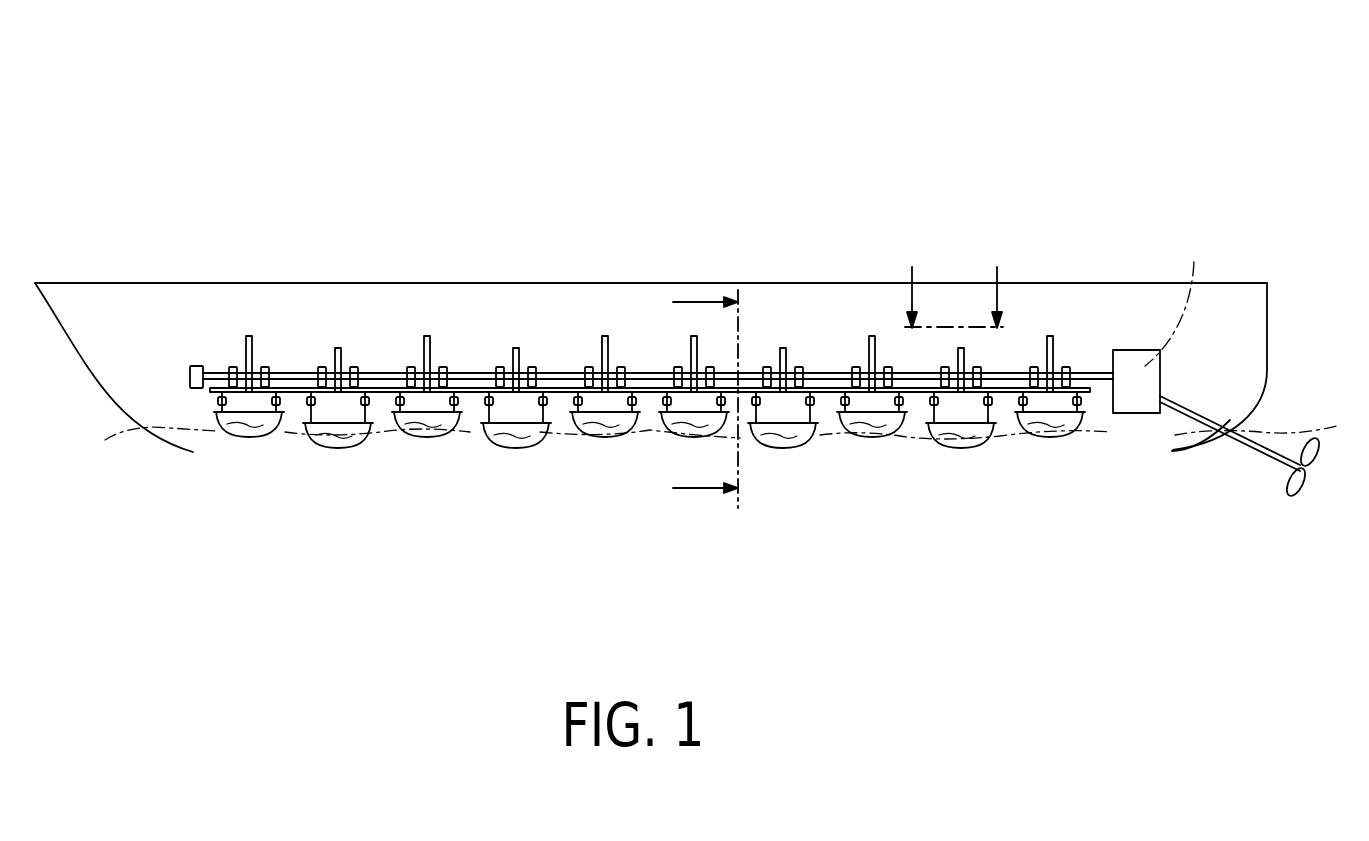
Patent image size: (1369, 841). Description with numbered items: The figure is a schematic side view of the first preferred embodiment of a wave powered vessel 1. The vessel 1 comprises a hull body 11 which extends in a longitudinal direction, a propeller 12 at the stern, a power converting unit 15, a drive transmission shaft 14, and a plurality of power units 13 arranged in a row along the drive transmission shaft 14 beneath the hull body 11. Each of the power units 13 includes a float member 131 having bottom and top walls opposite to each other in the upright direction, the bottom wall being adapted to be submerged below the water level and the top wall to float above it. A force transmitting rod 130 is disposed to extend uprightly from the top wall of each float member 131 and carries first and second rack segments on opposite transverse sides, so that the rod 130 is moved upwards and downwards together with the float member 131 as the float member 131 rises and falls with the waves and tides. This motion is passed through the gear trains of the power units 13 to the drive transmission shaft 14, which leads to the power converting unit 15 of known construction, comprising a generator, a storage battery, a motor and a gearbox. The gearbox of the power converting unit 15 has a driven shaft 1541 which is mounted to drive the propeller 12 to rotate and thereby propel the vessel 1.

The wave powered vessel 1 is at (683, 182).
The hull body 11 is at (940, 282).
The propeller 12 is at (1298, 492).
The power units 13 is at (230, 343).
The force transmitting rod 130 is at (254, 350).
The float member 131 is at (250, 440).
The drive transmission shaft 14 is at (470, 372).
The power converting unit 15 is at (1130, 413).
The driven shaft 1541 is at (1190, 290).